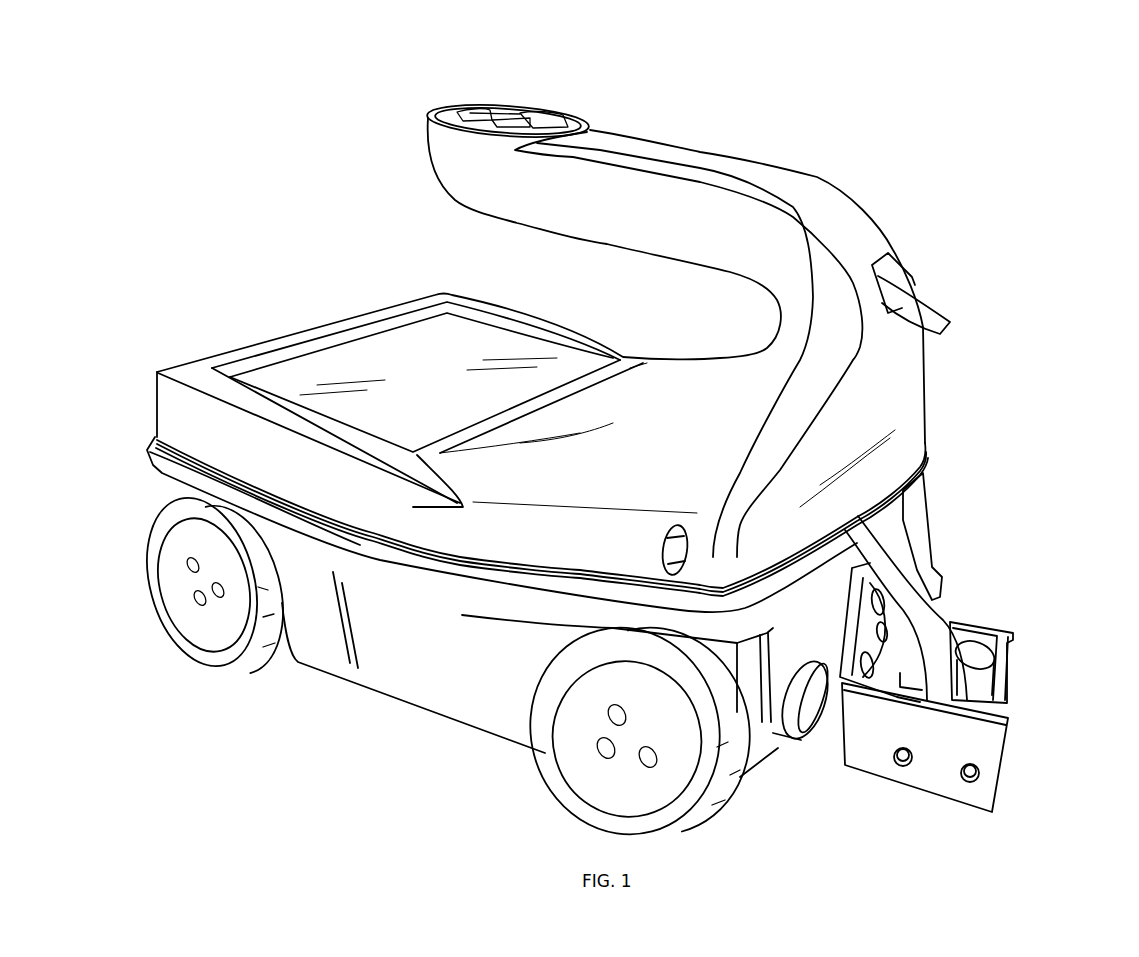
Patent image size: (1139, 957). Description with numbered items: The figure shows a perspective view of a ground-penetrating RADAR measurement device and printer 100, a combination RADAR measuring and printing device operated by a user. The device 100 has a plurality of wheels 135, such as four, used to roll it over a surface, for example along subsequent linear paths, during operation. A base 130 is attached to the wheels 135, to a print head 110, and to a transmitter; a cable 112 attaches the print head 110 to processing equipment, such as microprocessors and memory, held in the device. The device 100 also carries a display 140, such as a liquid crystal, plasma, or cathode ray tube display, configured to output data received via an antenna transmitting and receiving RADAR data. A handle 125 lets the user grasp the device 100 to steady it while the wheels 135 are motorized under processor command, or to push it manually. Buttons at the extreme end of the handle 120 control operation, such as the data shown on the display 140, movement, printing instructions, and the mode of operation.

The device 100 is at (623, 447).
The print head 110 is at (1000, 657).
The cable 112 is at (927, 612).
The extreme end of the handle 120 is at (542, 112).
The handle 125 is at (725, 217).
The base 130 is at (377, 663).
The wheels 135 is at (218, 630).
The display 140 is at (402, 370).